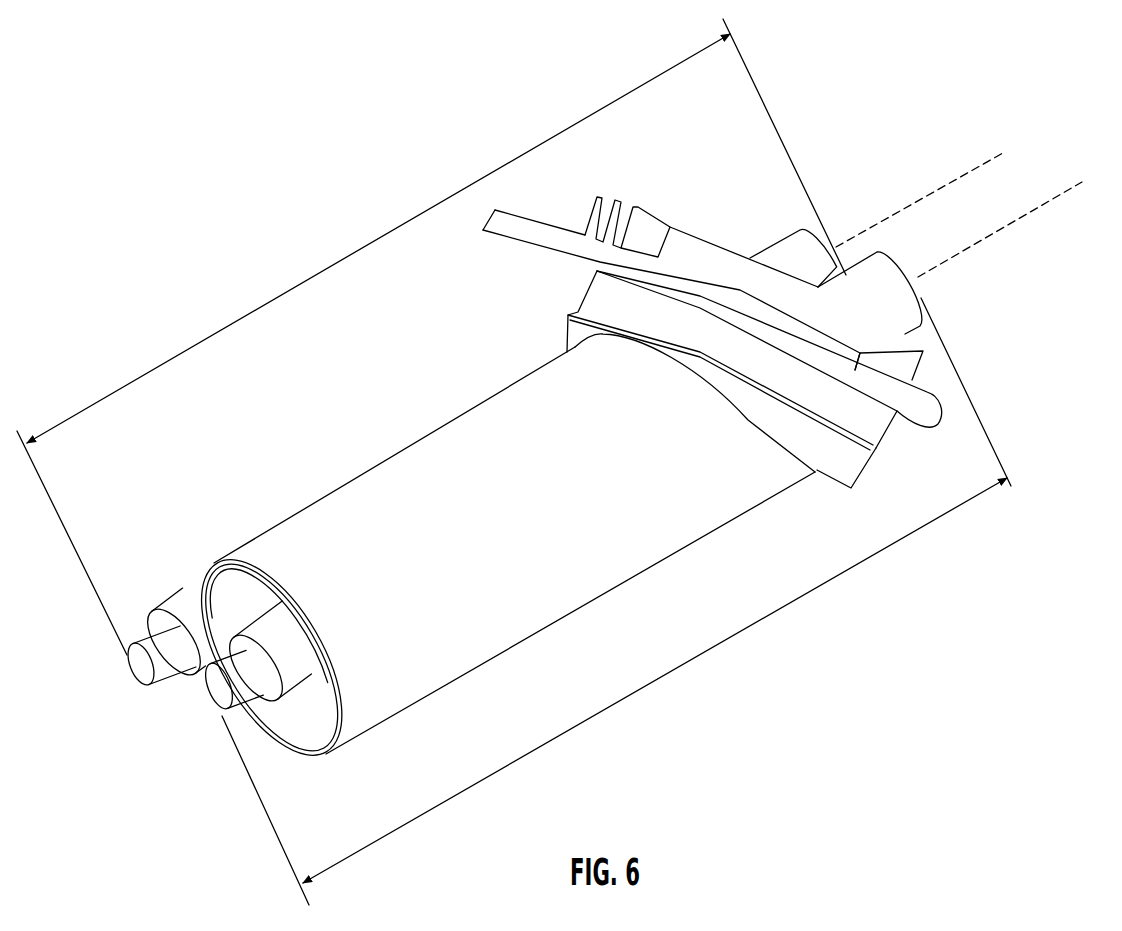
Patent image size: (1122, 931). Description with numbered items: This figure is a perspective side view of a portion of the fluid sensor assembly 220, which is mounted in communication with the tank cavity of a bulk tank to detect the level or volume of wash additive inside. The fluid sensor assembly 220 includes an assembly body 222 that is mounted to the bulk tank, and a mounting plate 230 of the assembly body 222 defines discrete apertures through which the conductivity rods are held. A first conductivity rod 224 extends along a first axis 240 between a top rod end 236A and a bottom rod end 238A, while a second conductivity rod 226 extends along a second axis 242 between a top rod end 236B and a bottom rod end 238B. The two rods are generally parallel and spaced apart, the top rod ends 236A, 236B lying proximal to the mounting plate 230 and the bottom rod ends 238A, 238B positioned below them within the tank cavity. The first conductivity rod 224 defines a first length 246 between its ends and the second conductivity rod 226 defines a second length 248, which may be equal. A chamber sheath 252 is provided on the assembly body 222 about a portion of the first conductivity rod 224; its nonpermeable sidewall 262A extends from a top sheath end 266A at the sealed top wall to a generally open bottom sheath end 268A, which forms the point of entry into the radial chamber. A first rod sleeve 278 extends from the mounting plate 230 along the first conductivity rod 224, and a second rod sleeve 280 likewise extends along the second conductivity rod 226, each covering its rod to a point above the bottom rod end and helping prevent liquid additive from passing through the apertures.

The fluid sensor assembly 220 is at (426, 102).
The assembly body 222 is at (489, 212).
The first conductivity rod 224 is at (273, 740).
The second conductivity rod 226 is at (132, 643).
The mounting plate 230 is at (848, 469).
The top rod end 236A is at (929, 298).
The top rod end 236B is at (825, 233).
The bottom rod end 238A is at (210, 689).
The bottom rod end 238B is at (127, 669).
The first axis 240 is at (1053, 198).
The second axis 242 is at (936, 188).
The first length 246 is at (665, 678).
The second length 248 is at (191, 349).
The chamber sheath 252 is at (603, 598).
The nonpermeable sidewall 262A is at (535, 596).
The top sheath end 266A is at (741, 422).
The bottom sheath end 268A is at (228, 590).
The first rod sleeve 278 is at (290, 657).
The second rod sleeve 280 is at (182, 597).